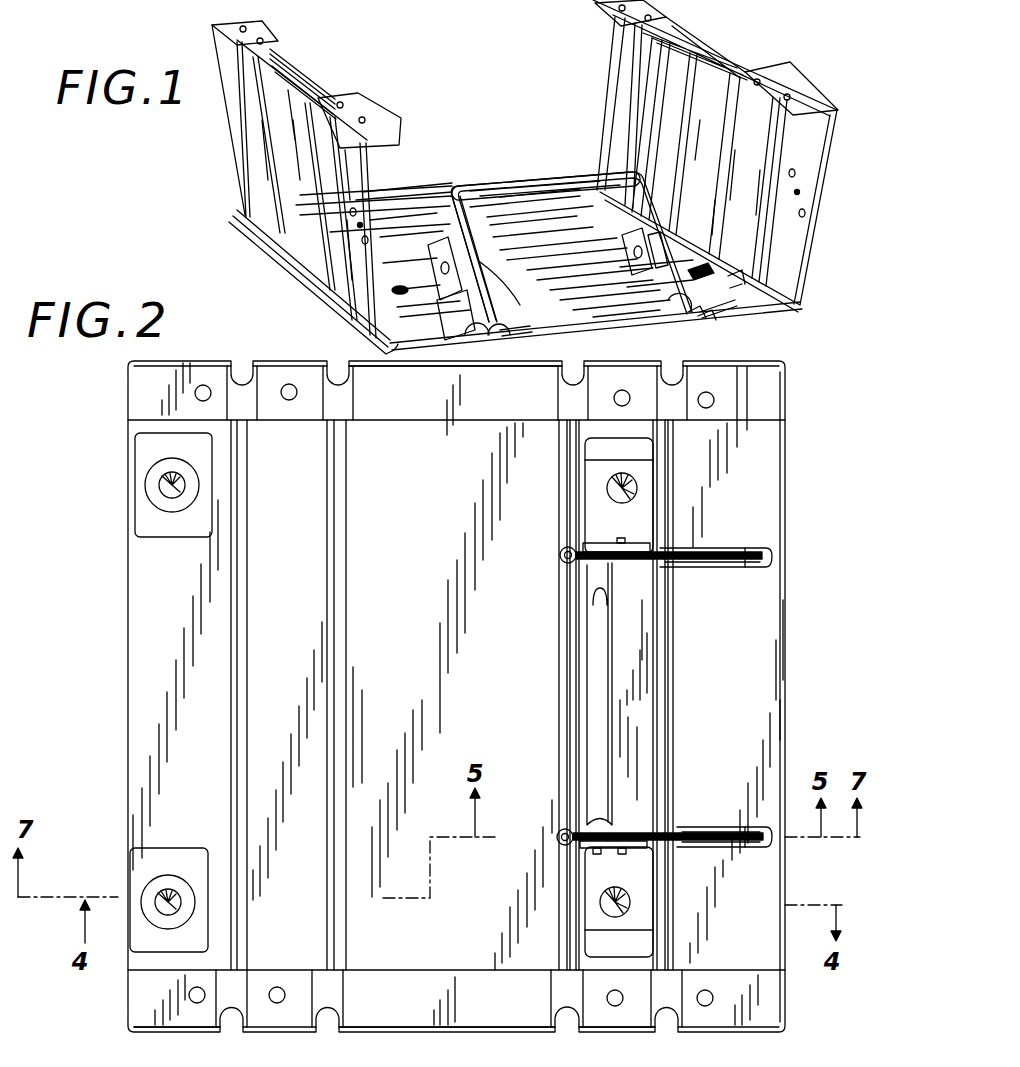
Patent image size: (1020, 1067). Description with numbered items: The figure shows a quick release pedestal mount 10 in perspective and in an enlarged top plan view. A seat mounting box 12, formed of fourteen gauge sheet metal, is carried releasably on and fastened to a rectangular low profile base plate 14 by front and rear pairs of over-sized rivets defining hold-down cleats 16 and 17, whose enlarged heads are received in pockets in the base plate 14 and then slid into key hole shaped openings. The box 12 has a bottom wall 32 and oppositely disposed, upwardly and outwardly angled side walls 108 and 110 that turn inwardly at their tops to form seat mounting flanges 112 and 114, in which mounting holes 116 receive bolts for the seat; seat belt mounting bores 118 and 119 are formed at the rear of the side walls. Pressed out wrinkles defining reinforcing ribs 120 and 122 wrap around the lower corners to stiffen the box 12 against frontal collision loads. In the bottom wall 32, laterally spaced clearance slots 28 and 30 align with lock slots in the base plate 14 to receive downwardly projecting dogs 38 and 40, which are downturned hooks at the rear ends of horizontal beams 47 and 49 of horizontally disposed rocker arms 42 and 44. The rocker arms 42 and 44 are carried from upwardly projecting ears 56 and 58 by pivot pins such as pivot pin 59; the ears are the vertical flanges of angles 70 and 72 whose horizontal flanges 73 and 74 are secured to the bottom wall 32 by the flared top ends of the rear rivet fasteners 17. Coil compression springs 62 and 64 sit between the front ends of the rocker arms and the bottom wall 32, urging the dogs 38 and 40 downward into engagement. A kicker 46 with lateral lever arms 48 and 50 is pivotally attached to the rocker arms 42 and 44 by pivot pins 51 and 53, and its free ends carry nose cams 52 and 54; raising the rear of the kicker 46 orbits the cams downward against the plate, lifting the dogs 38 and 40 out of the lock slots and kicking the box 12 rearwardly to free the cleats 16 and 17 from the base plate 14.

In FIG. 1, the quick release pedestal mount 10 is at (238, 212).
In FIG. 1, the seat mounting box 12 is at (228, 103).
In FIG. 1, the base plate 14 is at (235, 222).
In FIG. 2, the front hold-down cleats 16 is at (172, 898).
In FIG. 1, the rear hold-down cleats 17 is at (735, 278).
In FIG. 2, the rear hold-down cleats 17 is at (625, 892).
In FIG. 1, the clearance slot 28 is at (500, 336).
In FIG. 2, the clearance slot 28 is at (745, 848).
In FIG. 1, the clearance slot 30 is at (712, 312).
In FIG. 2, the clearance slot 30 is at (748, 548).
In FIG. 2, the bottom wall 32 is at (408, 537).
In FIG. 1, the dog 38 is at (476, 336).
In FIG. 1, the dog 40 is at (688, 312).
In FIG. 1, the rocker arm 42 is at (468, 275).
In FIG. 1, the rocker arm 44 is at (670, 305).
In FIG. 1, the kicker 46 is at (548, 185).
In FIG. 2, the kicker 46 is at (587, 690).
In FIG. 1, the horizontal beam 47 is at (432, 250).
In FIG. 1, the lever arm 48 is at (436, 190).
In FIG. 2, the lever arm 48 is at (660, 830).
In FIG. 1, the horizontal beam 49 is at (628, 236).
In FIG. 1, the lever arm 50 is at (645, 180).
In FIG. 2, the lever arm 50 is at (680, 568).
In FIG. 1, the pivot pin 51 is at (520, 305).
In FIG. 1, the nose cam 52 is at (515, 330).
In FIG. 2, the nose cam 52 is at (720, 827).
In FIG. 1, the pivot pin 53 is at (706, 276).
In FIG. 1, the nose cam 54 is at (700, 316).
In FIG. 2, the nose cam 54 is at (748, 568).
In FIG. 1, the ear 56 is at (447, 310).
In FIG. 2, the ear 56 is at (596, 854).
In FIG. 2, the ear 58 is at (585, 546).
In FIG. 1, the pivot pin 59 is at (655, 233).
In FIG. 1, the coil compression spring 62 is at (428, 272).
In FIG. 2, the coil compression spring 62 is at (557, 840).
In FIG. 2, the coil compression spring 64 is at (560, 557).
In FIG. 2, the angle 70 is at (655, 850).
In FIG. 2, the angle 72 is at (663, 510).
In FIG. 2, the horizontal flange 73 is at (590, 935).
In FIG. 2, the horizontal flange 74 is at (588, 500).
In FIG. 1, the side wall 108 is at (275, 133).
In FIG. 1, the side wall 110 is at (820, 128).
In FIG. 1, the seat mounting flange 112 is at (315, 80).
In FIG. 2, the seat mounting flange 112 is at (505, 1030).
In FIG. 1, the seat mounting flange 114 is at (715, 45).
In FIG. 2, the seat mounting flange 114 is at (395, 425).
In FIG. 1, the mounting holes 116 is at (795, 95).
In FIG. 2, the mounting holes 116 is at (277, 985).
In FIG. 1, the seat belt mounting bore 118 is at (806, 213).
In FIG. 1, the seat belt mounting bore 119 is at (800, 192).
In FIG. 2, the reinforcing ribs 120 is at (330, 1030).
In FIG. 2, the reinforcing ribs 122 is at (660, 1030).